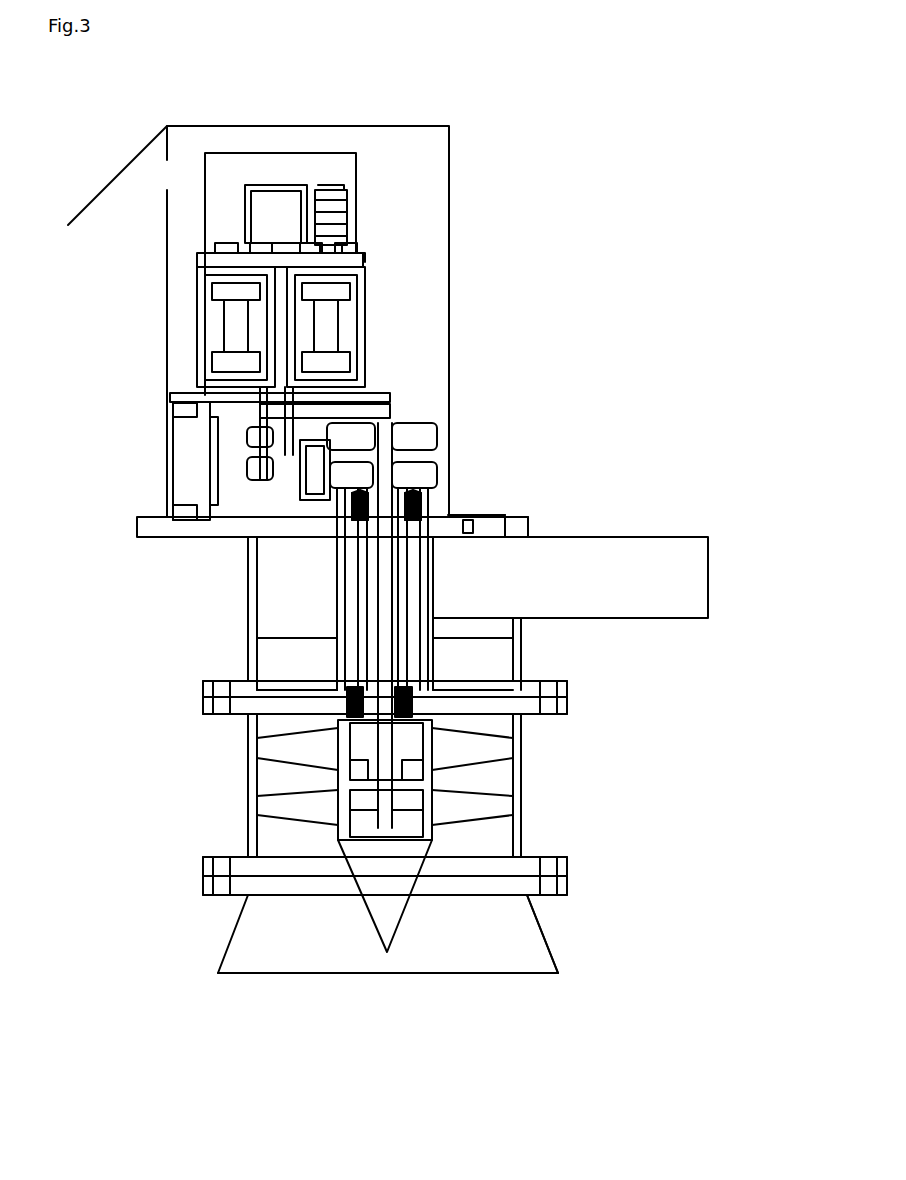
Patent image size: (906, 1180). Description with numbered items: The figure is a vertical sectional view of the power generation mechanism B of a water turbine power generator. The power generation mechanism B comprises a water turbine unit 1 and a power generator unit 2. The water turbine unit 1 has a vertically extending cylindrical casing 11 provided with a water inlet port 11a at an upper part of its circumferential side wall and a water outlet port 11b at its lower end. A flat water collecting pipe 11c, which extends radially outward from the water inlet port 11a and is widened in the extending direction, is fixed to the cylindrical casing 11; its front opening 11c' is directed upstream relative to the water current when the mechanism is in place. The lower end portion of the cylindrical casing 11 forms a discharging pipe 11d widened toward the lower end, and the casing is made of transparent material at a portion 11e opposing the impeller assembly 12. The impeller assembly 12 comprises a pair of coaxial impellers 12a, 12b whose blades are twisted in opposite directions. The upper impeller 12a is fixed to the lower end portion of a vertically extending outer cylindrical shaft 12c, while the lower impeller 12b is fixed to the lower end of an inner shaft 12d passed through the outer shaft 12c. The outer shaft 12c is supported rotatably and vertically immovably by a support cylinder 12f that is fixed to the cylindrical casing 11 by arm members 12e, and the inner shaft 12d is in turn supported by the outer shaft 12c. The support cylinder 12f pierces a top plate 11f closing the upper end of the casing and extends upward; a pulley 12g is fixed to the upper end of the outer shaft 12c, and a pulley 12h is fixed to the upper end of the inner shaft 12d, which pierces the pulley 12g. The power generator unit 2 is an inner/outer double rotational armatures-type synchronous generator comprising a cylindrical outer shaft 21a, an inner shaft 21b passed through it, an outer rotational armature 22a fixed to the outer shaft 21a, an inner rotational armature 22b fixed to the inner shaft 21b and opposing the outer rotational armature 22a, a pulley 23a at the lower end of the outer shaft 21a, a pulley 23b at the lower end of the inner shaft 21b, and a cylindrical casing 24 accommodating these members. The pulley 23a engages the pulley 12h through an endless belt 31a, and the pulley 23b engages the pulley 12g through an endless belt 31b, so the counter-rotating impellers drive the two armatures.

The water turbine unit 1 is at (540, 745).
The power generator unit 2 is at (188, 318).
The cylindrical casing 11 is at (250, 618).
The water inlet port 11a is at (520, 582).
The water outlet port 11b is at (400, 976).
The water collecting pipe 11c is at (602, 654).
The front opening 11c' is at (744, 580).
The discharging pipe 11d is at (540, 930).
The transparent portion 11e is at (252, 748).
The top plate 11f is at (500, 528).
The impeller assembly 12 is at (478, 779).
The impeller 12a is at (318, 760).
The impeller 12b is at (320, 812).
The outer cylindrical shaft 12c is at (400, 568).
The inner shaft 12d is at (385, 432).
The arm members 12e is at (290, 662).
The support cylinder 12f is at (420, 598).
The pulley 12g is at (430, 472).
The pulley 12h is at (425, 440).
The outer shaft 21a is at (305, 405).
The inner shaft 21b is at (297, 372).
The outer rotational armature 22a is at (337, 327).
The inner rotational armature 22b is at (330, 297).
The pulley 23a is at (250, 437).
The pulley 23b is at (262, 467).
The cylindrical casing 24 is at (365, 265).
The endless belt 31a is at (330, 425).
The endless belt 31b is at (318, 488).
The power generation mechanism B is at (480, 506).